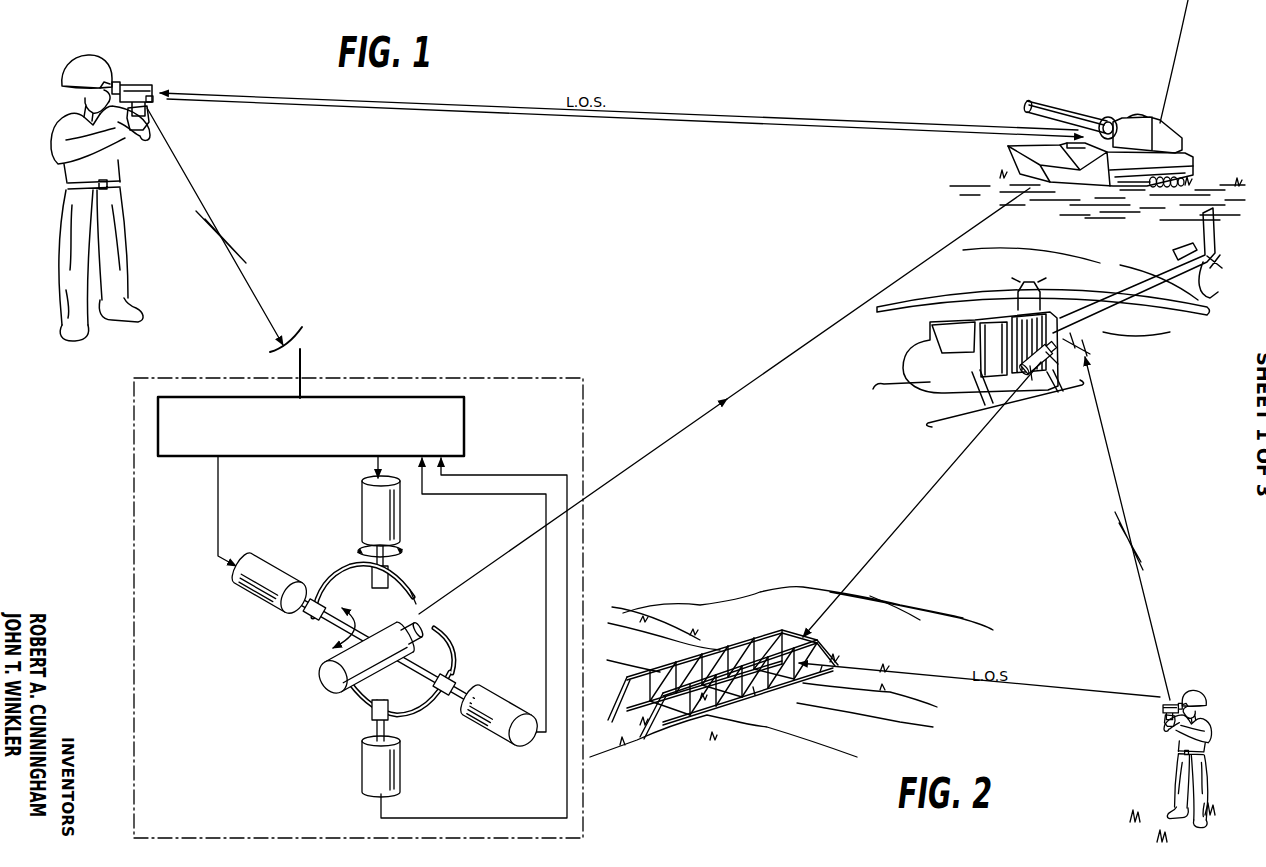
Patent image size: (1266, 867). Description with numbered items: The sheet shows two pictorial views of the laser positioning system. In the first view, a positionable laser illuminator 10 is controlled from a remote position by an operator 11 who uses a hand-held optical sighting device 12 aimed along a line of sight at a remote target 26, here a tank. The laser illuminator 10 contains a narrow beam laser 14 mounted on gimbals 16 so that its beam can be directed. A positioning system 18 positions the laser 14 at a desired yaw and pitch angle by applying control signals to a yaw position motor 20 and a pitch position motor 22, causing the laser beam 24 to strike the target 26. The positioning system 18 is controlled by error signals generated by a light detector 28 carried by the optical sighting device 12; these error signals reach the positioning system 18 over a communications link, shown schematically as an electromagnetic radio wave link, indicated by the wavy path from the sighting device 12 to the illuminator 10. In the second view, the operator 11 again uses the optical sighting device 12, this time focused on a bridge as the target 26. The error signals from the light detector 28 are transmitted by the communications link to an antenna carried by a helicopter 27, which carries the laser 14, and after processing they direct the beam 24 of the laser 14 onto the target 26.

In FIG. 1, the laser illuminator 10 is at (585, 432).
In FIG. 1, the operator 11 is at (58, 148).
In FIG. 2, the operator 11 is at (1168, 752).
In FIG. 1, the optical sighting device 12 is at (147, 84).
In FIG. 2, the optical sighting device 12 is at (1160, 705).
In FIG. 1, the narrow beam laser 14 is at (320, 667).
In FIG. 2, the narrow beam laser 14 is at (1036, 380).
In FIG. 1, the gimbals 16 is at (343, 570).
In FIG. 1, the positioning system 18 is at (464, 425).
In FIG. 1, the yaw position motor 20 is at (362, 509).
In FIG. 1, the pitch position motor 22 is at (250, 596).
In FIG. 1, the laser beam 24 is at (750, 387).
In FIG. 2, the laser beam 24 is at (940, 476).
In FIG. 1, the remote target 26 is at (1108, 120).
In FIG. 2, the remote target 26 is at (733, 693).
In FIG. 2, the helicopter 27 is at (927, 382).
In FIG. 1, the light detector 28 is at (153, 102).